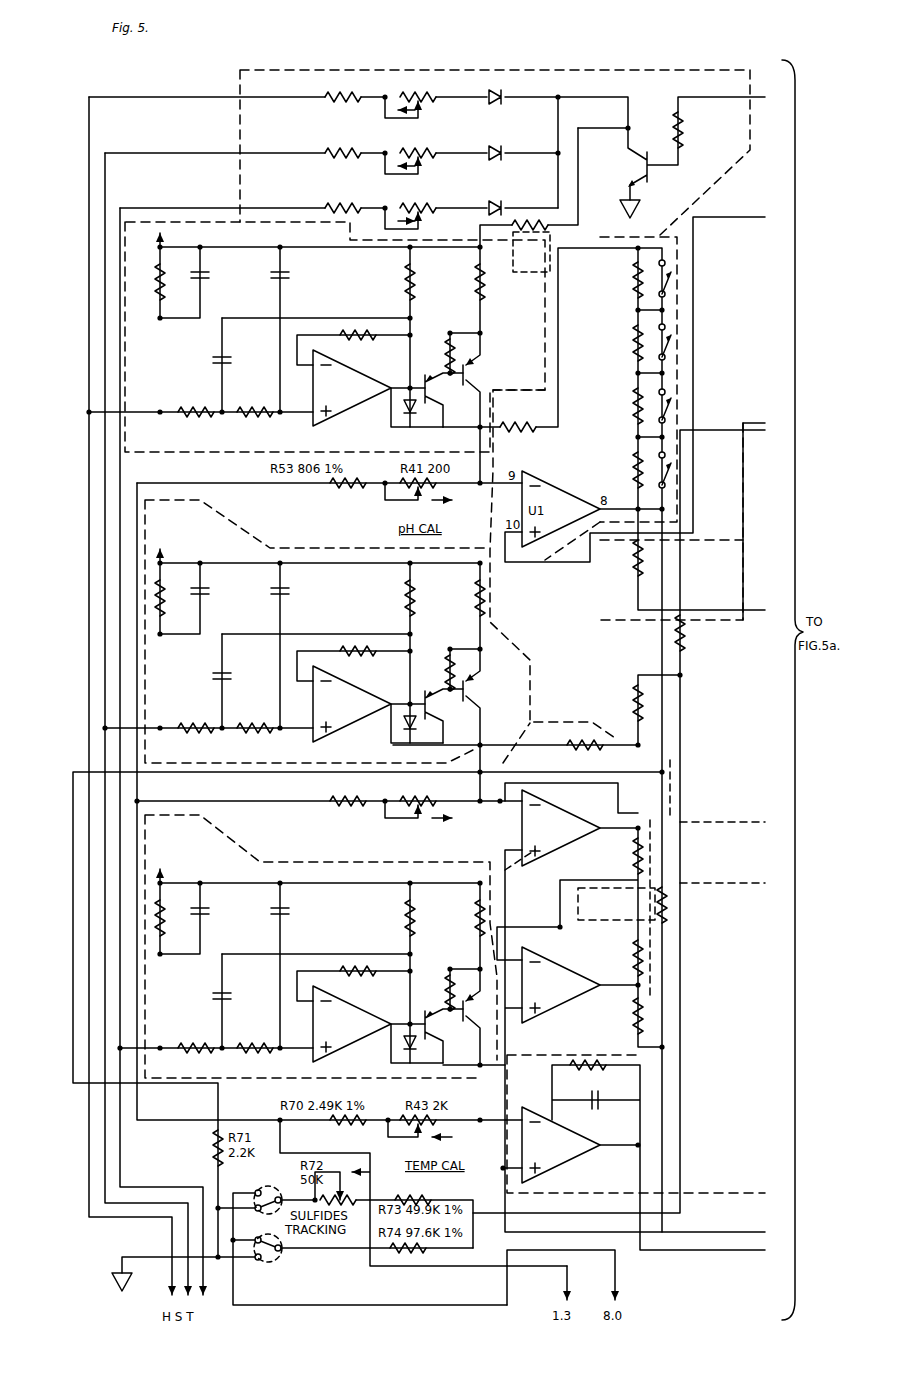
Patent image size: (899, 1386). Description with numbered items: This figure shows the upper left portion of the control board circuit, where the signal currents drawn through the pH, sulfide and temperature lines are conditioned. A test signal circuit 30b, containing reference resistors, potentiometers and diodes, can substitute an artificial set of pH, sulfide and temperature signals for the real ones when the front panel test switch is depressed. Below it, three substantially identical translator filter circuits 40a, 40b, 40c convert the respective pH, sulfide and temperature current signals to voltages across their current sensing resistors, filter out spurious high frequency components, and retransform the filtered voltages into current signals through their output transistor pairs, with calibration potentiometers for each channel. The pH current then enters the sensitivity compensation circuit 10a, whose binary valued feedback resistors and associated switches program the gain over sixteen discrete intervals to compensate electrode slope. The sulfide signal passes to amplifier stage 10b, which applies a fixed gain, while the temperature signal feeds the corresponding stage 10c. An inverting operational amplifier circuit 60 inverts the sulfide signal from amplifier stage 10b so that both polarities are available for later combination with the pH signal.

The test signal circuit 30b is at (758, 82).
The pH translator filter circuit 40a is at (125, 263).
The pS translator filter circuit 40b is at (145, 570).
The temperature translator filter circuit 40c is at (145, 858).
The sensitivity compensation circuit 10a is at (680, 240).
The amplifier stage 10b is at (530, 722).
The temperature amplifier stage 10c is at (618, 1198).
The inverting operational amplifier circuit 60 is at (650, 843).